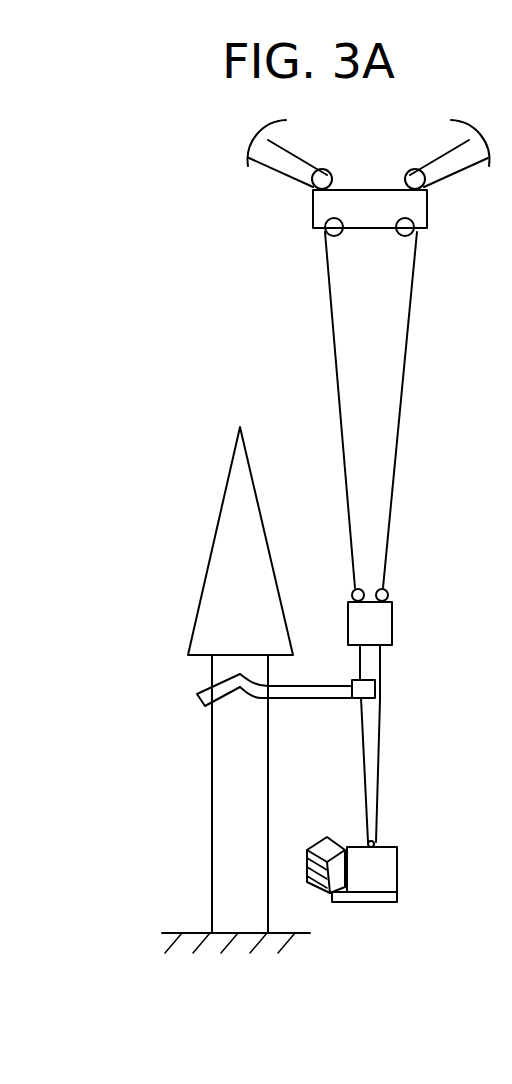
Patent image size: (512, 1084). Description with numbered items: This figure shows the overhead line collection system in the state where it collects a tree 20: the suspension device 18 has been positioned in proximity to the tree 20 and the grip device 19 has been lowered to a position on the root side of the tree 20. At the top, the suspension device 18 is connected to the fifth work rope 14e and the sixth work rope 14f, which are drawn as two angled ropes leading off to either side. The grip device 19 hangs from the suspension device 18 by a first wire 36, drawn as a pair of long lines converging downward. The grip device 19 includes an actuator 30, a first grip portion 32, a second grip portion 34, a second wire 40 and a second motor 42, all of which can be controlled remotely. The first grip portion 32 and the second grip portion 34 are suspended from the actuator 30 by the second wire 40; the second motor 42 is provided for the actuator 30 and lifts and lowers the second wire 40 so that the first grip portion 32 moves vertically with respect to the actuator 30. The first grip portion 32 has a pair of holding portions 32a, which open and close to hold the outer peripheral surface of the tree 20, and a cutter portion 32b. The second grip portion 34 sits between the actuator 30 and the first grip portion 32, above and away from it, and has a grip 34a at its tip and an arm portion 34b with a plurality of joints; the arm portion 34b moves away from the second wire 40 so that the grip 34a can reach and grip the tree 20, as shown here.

The fifth work rope 14e is at (295, 148).
The sixth work rope 14f is at (430, 153).
The suspension device 18 is at (418, 210).
The first wire 36 is at (412, 297).
The grip device 19 is at (291, 754).
The actuator 30 is at (348, 618).
The second motor 42 is at (385, 650).
The second grip portion 34 is at (377, 690).
The second wire 40 is at (378, 727).
The grip 34a is at (203, 690).
The arm portion 34b is at (315, 703).
The first grip portion 32 is at (387, 872).
The holding portions 32a is at (328, 884).
The cutter portion 32b is at (375, 898).
The tree 20 is at (235, 792).